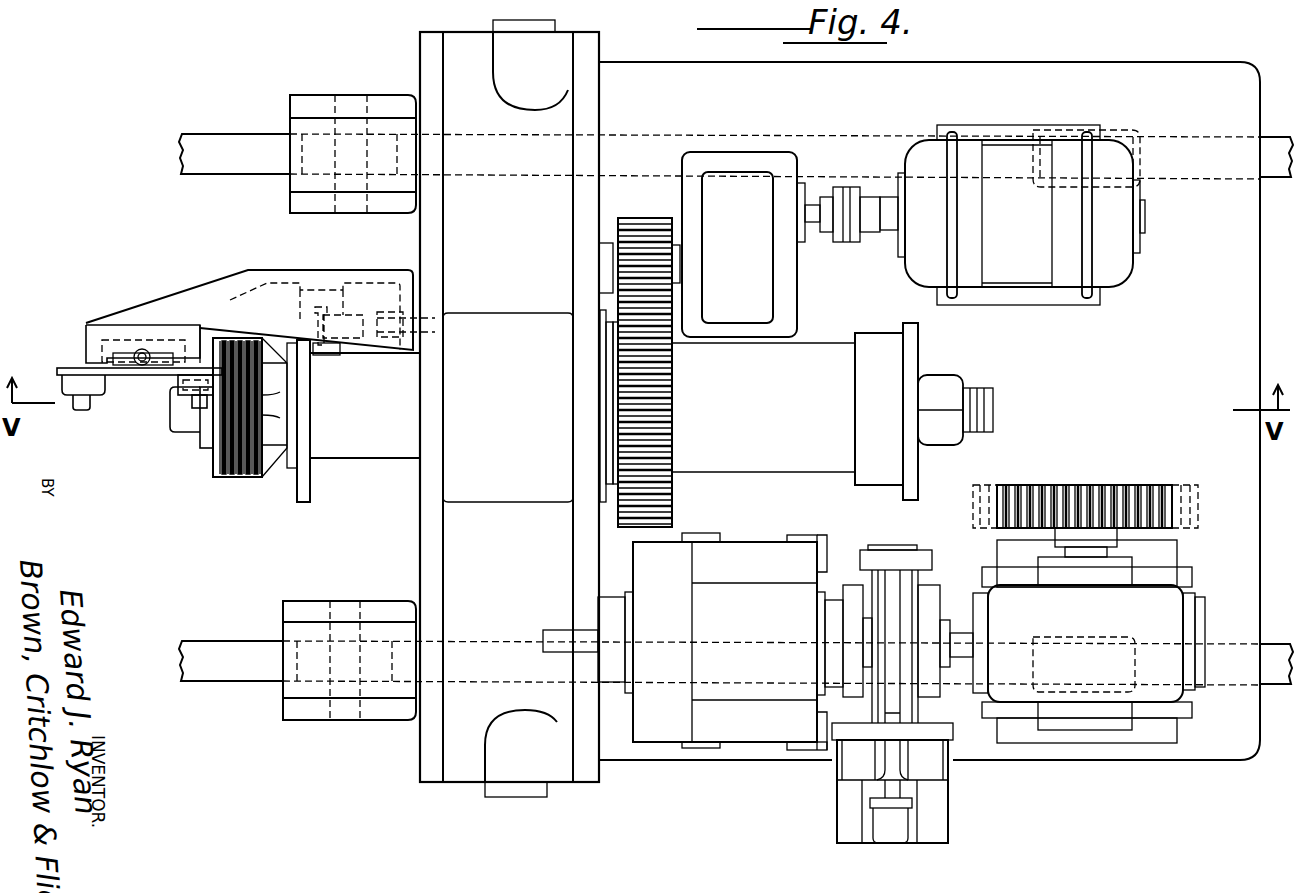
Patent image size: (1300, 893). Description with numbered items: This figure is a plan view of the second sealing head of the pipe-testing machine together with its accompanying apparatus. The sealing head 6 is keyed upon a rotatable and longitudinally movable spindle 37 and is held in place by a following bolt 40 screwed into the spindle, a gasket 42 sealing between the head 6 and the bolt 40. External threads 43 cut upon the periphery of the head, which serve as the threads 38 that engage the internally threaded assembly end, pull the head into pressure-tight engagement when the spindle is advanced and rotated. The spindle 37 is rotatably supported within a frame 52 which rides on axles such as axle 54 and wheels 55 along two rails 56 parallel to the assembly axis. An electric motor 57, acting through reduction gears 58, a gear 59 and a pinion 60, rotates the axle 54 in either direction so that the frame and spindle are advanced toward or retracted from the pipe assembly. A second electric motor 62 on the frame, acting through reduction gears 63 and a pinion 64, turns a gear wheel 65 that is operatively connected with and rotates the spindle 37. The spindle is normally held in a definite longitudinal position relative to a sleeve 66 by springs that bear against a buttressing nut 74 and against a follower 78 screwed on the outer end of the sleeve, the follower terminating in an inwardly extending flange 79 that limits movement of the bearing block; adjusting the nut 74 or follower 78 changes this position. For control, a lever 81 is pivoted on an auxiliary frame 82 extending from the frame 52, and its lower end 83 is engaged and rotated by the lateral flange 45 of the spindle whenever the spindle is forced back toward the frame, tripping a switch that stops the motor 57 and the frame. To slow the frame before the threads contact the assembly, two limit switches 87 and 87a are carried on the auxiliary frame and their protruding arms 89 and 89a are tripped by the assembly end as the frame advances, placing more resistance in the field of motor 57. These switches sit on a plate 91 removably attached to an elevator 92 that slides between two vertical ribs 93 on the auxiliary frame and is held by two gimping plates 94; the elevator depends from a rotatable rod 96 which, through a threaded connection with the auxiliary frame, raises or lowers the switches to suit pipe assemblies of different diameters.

The sealing head 6 is at (213, 466).
The spindle 37 is at (370, 445).
The threads 38 is at (222, 473).
The following bolt 40 is at (186, 420).
The gasket 42 is at (205, 440).
The external threads 43 is at (243, 478).
The lateral flange 45 is at (305, 490).
The frame 52 is at (492, 502).
The axle 54 is at (330, 125).
The wheels 55 is at (300, 152).
The rails 56 is at (222, 148).
The electric motor 57 is at (760, 690).
The reduction gears 58 is at (1020, 673).
The gear 59 is at (1150, 485).
The pinion 60 is at (1185, 490).
The electric motor 62 is at (1012, 160).
The reduction gears 63 is at (738, 185).
The pinion 64 is at (645, 226).
The gear wheel 65 is at (660, 375).
The sleeve 66 is at (825, 348).
The buttressing nut 74 is at (935, 375).
The follower 78 is at (880, 333).
The inwardly extending flange 79 is at (915, 340).
The lever 81 is at (313, 305).
The auxiliary frame 82 is at (272, 272).
The lower end of lever 83 is at (368, 300).
The limit switch 87 is at (65, 383).
The limit switch 87a is at (178, 383).
The protruding arm 89 is at (77, 405).
The protruding arm 89a is at (195, 403).
The plate 91 is at (60, 368).
The elevator 92 is at (105, 340).
The vertical ribs 93 is at (86, 335).
The gimping plates 94 is at (87, 360).
The rotatable rod 96 is at (142, 350).